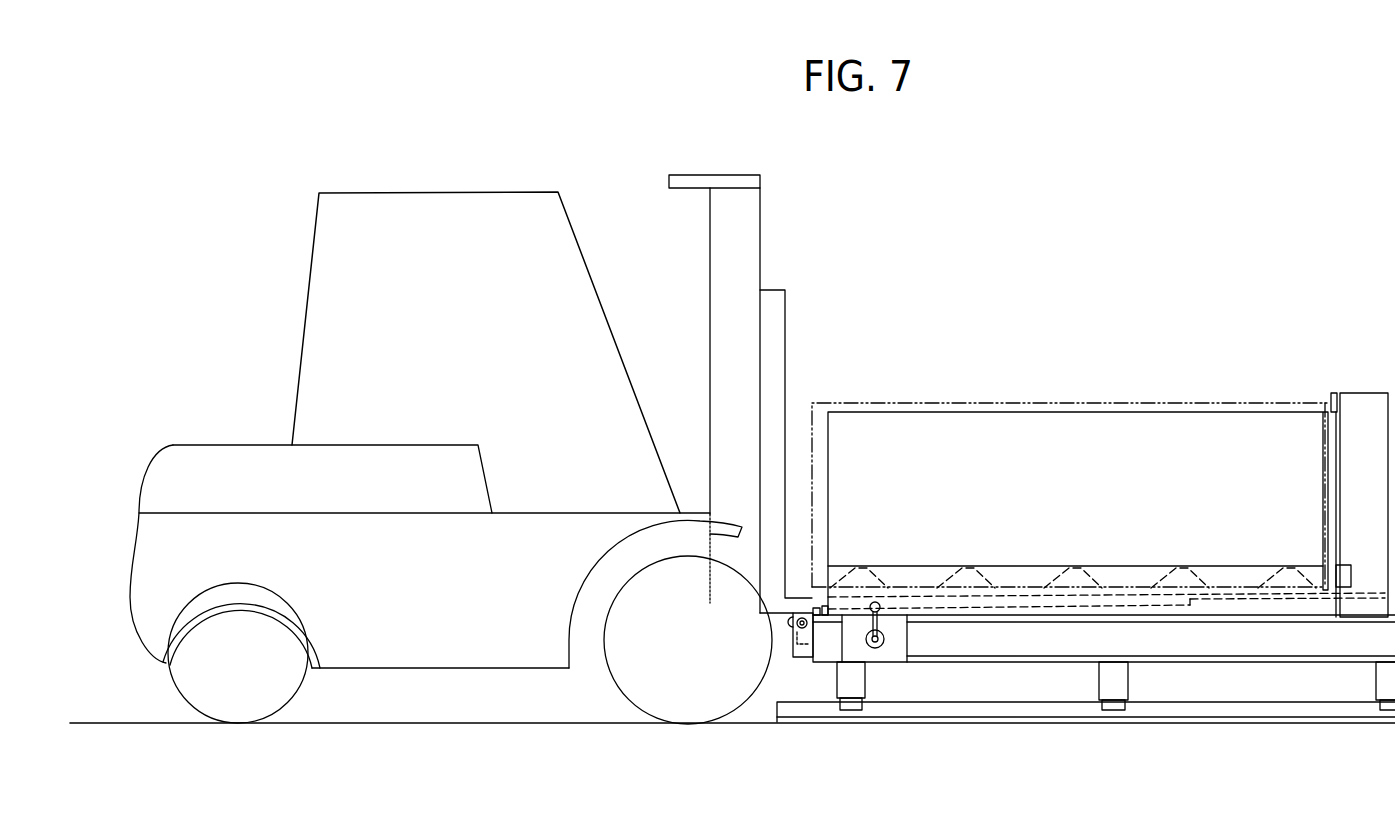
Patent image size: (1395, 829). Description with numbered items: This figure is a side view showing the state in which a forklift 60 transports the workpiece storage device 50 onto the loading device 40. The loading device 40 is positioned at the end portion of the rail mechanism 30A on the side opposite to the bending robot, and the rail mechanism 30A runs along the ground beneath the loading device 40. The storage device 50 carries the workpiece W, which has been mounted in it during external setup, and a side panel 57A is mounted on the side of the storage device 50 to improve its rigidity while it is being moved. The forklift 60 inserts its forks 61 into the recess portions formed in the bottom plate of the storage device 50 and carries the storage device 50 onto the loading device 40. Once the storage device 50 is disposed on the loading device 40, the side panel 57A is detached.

The rail mechanism 30A is at (1232, 722).
The loading device 40 is at (1343, 578).
The storage device 50 is at (1252, 408).
The side panel 57A is at (1168, 428).
The forklift 60 is at (247, 456).
The forks 61 is at (795, 603).
The workpiece W is at (977, 403).